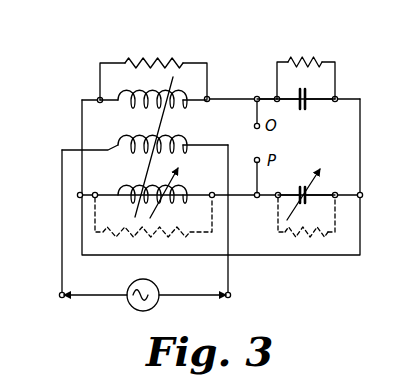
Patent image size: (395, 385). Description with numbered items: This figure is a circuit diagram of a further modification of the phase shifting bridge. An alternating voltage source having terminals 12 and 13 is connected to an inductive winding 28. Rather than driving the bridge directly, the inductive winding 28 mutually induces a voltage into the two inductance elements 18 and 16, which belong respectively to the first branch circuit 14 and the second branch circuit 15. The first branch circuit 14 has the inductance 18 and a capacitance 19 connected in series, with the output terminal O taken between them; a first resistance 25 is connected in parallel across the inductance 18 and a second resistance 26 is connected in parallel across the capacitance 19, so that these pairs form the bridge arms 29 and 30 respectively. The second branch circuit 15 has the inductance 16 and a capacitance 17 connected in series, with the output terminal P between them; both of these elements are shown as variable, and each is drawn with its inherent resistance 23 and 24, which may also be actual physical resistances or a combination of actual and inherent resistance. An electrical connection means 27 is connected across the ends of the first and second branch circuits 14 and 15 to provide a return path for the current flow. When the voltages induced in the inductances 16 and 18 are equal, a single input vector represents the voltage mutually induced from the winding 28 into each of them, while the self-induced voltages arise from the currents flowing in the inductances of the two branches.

The terminal 12 is at (65, 293).
The terminal 13 is at (231, 294).
The first branch circuit 14 is at (307, 135).
The second branch circuit 15 is at (292, 185).
The inductance 16 is at (181, 201).
The capacitance 17 is at (318, 174).
The inductance 18 is at (190, 101).
The capacitance 19 is at (306, 104).
The inherent resistance 23 is at (160, 235).
The inherent resistance 24 is at (290, 240).
The first resistance 25 is at (131, 63).
The second resistance 26 is at (293, 58).
The electrical connection means 27 is at (305, 256).
The inductive winding 28 is at (118, 145).
The bridge arm 29 is at (150, 85).
The bridge arm 30 is at (308, 85).